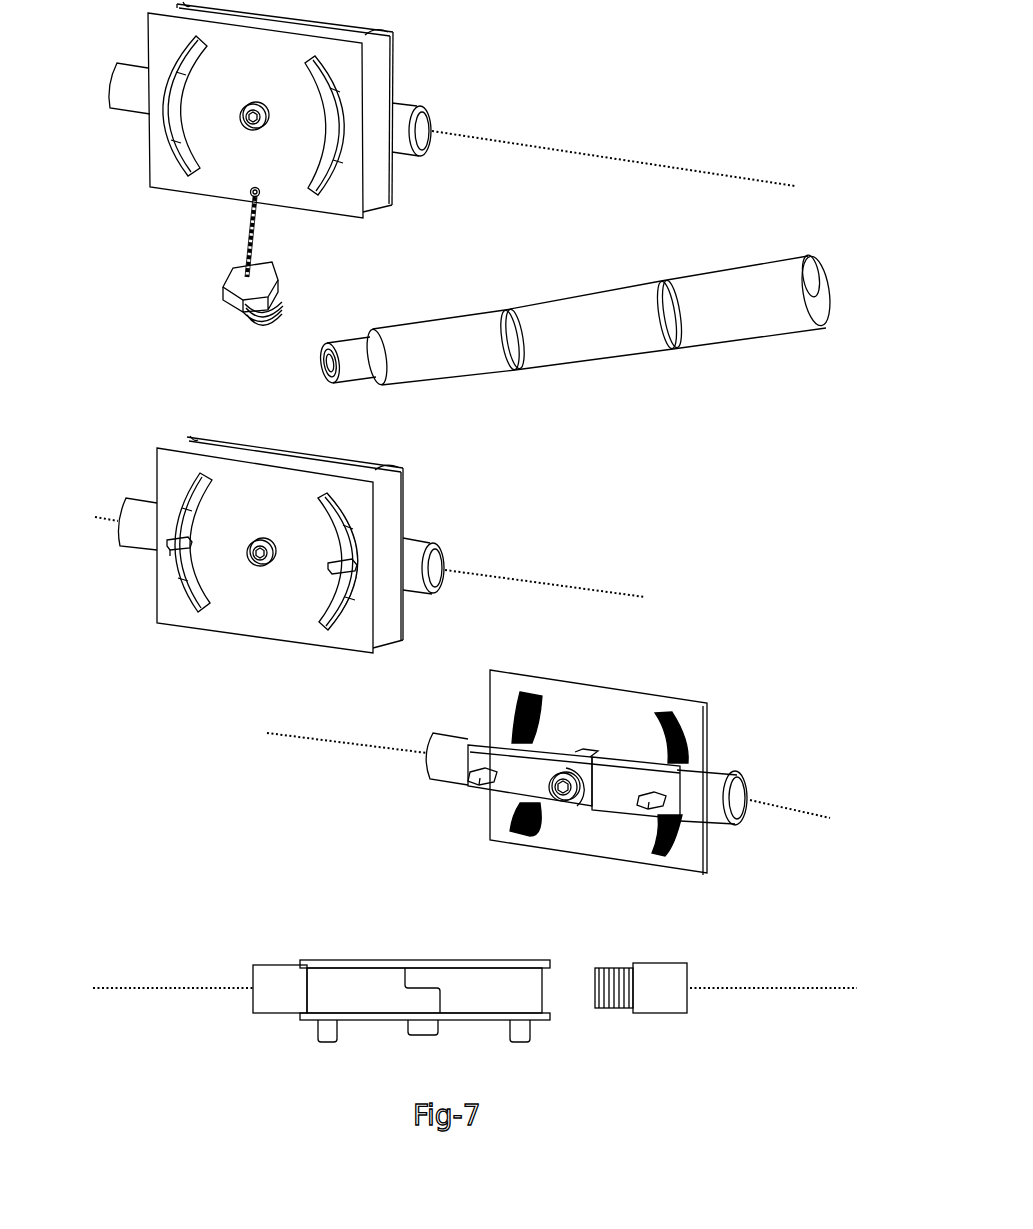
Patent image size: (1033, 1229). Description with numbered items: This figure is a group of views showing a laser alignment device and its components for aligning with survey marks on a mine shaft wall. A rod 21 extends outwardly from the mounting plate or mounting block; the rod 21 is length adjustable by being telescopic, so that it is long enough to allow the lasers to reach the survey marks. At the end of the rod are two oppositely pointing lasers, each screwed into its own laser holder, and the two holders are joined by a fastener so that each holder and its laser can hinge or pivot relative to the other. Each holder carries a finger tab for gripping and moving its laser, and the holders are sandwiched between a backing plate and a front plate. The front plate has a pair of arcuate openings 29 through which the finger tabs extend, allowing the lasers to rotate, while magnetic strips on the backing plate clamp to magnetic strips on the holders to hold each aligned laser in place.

The rod 21 is at (578, 292).
The arcuate opening 29 is at (340, 600).